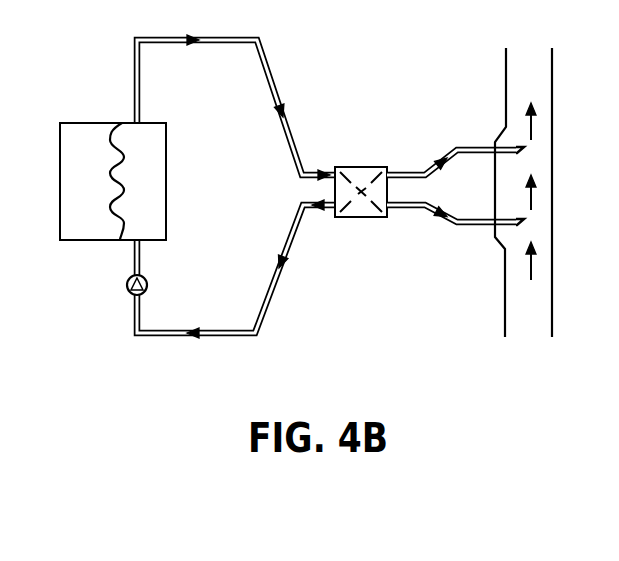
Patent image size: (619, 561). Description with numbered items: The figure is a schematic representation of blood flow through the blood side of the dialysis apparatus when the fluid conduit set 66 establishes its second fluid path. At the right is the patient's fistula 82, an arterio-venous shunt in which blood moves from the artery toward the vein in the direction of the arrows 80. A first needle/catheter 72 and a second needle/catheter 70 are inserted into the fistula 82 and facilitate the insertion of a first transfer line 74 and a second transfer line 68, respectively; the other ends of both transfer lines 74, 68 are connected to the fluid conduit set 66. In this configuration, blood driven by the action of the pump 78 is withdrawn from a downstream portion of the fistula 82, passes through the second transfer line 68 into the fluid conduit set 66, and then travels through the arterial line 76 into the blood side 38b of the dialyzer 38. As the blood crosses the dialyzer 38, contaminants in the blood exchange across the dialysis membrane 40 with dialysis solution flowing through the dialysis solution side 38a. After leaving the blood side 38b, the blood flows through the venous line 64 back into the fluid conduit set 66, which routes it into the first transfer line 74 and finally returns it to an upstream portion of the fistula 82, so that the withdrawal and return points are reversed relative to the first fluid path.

The dialyzer 38 is at (175, 155).
The dialysis solution side 38a is at (89, 143).
The blood side 38b is at (150, 187).
The dialysis membrane 40 is at (113, 187).
The venous line 64 is at (268, 56).
The fluid conduit set 66 is at (355, 167).
The second transfer line 68 is at (455, 150).
The second needle/catheter 70 is at (514, 157).
The first needle/catheter 72 is at (503, 218).
The first transfer line 74 is at (456, 228).
The arterial line 76 is at (276, 296).
The pump 78 is at (126, 289).
The arrows 80 is at (537, 196).
The fistula 82 is at (553, 90).